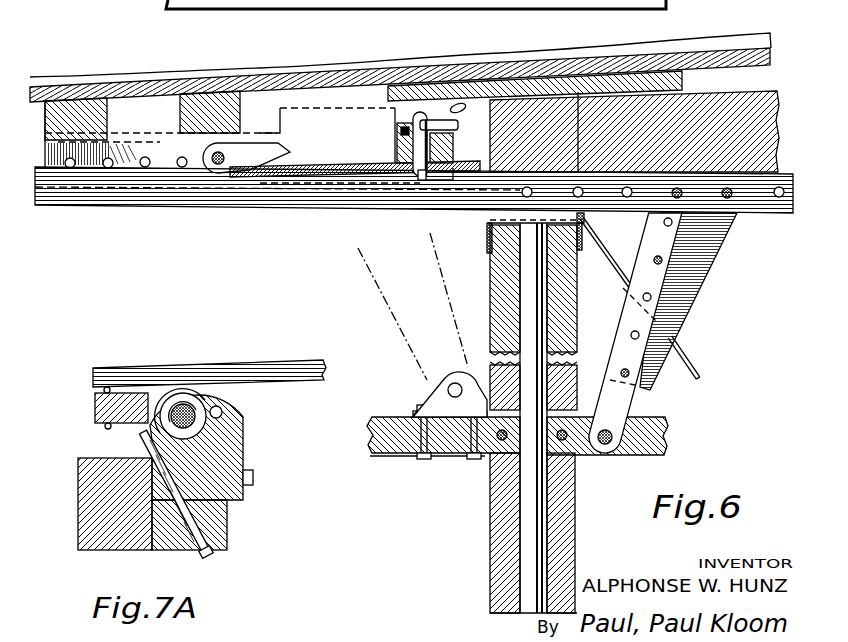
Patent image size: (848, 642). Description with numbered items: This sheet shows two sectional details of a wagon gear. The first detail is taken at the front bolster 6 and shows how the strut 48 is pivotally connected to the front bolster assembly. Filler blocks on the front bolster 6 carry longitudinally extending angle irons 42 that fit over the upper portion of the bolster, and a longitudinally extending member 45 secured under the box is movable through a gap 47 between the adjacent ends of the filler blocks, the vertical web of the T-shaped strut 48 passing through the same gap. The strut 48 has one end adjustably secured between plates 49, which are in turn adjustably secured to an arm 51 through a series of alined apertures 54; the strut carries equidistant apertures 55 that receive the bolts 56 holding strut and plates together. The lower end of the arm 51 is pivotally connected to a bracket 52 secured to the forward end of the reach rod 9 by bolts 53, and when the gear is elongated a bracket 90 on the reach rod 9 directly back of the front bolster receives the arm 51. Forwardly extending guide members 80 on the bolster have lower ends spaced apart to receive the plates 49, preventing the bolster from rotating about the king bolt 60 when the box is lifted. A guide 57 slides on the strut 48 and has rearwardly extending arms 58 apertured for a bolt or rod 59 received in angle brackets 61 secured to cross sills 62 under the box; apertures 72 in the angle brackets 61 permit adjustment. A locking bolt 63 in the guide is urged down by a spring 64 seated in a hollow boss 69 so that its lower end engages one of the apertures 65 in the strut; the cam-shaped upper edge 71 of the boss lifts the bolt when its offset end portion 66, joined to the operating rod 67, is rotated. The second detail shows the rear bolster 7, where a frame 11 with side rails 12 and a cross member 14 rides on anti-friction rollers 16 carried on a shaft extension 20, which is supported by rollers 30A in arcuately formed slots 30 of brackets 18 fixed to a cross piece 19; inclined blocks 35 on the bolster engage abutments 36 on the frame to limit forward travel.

In FIG. 6, the front bolster 6 is at (413, 0).
In FIG. 6, the rear bolster 7 is at (32, 118).
In FIG. 7A, the rear bolster 7 is at (86, 521).
In FIG. 6, the reach rod 9 is at (375, 418).
In FIG. 7A, the structural frame 11 is at (184, 352).
In FIG. 7A, the side rails 12 is at (137, 378).
In FIG. 7A, the cross member 14 is at (95, 402).
In FIG. 7A, the anti-friction rollers 16 is at (230, 410).
In FIG. 7A, the brackets 18 is at (243, 447).
In FIG. 7A, the cross piece 19 is at (225, 534).
In FIG. 7A, the shaft extension 20 is at (195, 404).
In FIG. 7A, the arcuately formed slots 30 is at (233, 418).
In FIG. 7A, the rollers 30A is at (197, 410).
In FIG. 7A, the inclined blocks or abutments 35 is at (147, 432).
In FIG. 7A, the blocks or abutments 36 is at (95, 433).
In FIG. 6, the angle irons 42 is at (488, 235).
In FIG. 6, the longitudinally extending member 45 is at (762, 92).
In FIG. 6, the gap 47 is at (724, 0).
In FIG. 6, the strut 48 is at (298, 208).
In FIG. 6, the plates 49 is at (395, 325).
In FIG. 6, the arm 51 is at (630, 408).
In FIG. 6, the bracket 52 is at (599, 425).
In FIG. 6, the bolts 53 is at (502, 442).
In FIG. 6, the alined apertures 54 is at (664, 223).
In FIG. 6, the apertures 55 is at (781, 188).
In FIG. 6, the bolts 56 is at (733, 199).
In FIG. 6, the guide 57 is at (338, 162).
In FIG. 6, the arms 58 is at (268, 152).
In FIG. 6, the bolt or rod 59 is at (219, 166).
In FIG. 6, the king bolt 60 is at (525, 572).
In FIG. 6, the angle brackets 61 is at (143, 142).
In FIG. 6, the cross sills 62 is at (89, 110).
In FIG. 6, the locking bolt 63 is at (425, 175).
In FIG. 6, the spring 64 is at (397, 148).
In FIG. 6, the apertures 65 is at (437, 178).
In FIG. 6, the offset end portion 66 is at (440, 120).
In FIG. 6, the operating rod 67 is at (466, 104).
In FIG. 6, the hollow boss 69 is at (400, 131).
In FIG. 6, the upper edge 71 is at (420, 120).
In FIG. 6, the apertures 72 is at (145, 170).
In FIG. 6, the guide members 80 is at (687, 354).
In FIG. 6, the bracket 90 is at (432, 389).